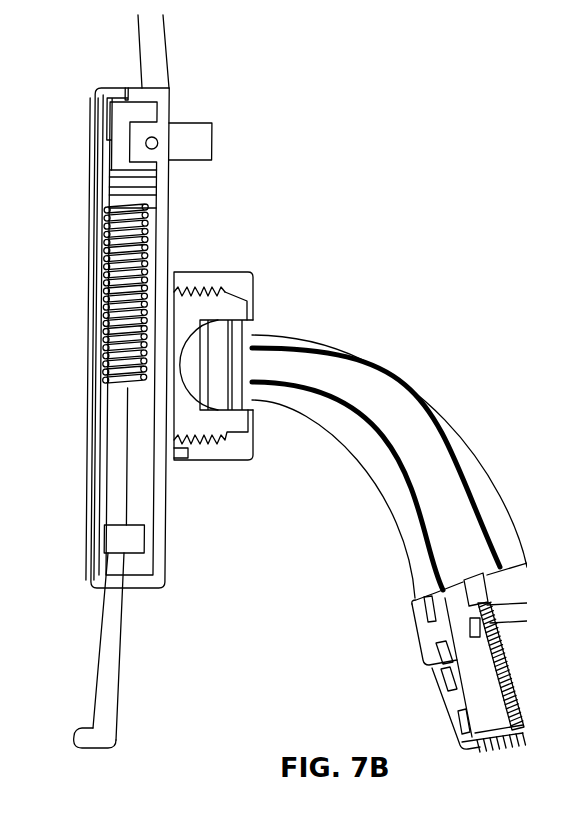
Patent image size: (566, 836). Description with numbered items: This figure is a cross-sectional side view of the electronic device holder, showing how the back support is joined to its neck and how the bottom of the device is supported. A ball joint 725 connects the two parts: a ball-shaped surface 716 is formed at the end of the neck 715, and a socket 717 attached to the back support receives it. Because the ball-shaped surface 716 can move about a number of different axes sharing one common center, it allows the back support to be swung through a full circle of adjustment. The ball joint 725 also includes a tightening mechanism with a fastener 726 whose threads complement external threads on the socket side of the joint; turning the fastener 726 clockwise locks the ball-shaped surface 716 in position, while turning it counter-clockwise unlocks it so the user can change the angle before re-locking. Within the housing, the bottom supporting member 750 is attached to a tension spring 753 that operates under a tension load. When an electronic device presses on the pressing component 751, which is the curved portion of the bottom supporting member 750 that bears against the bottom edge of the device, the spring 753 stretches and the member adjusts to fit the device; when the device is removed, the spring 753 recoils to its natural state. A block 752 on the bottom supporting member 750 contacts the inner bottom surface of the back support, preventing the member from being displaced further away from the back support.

The neck 715 is at (470, 477).
The ball-shaped surface 716 is at (252, 400).
The socket 717 is at (200, 312).
The ball joint 725 is at (190, 277).
The fastener 726 is at (245, 277).
The bottom supporting member 750 is at (108, 670).
The pressing component 751 is at (83, 740).
The block 752 is at (139, 543).
The tension spring 753 is at (149, 232).